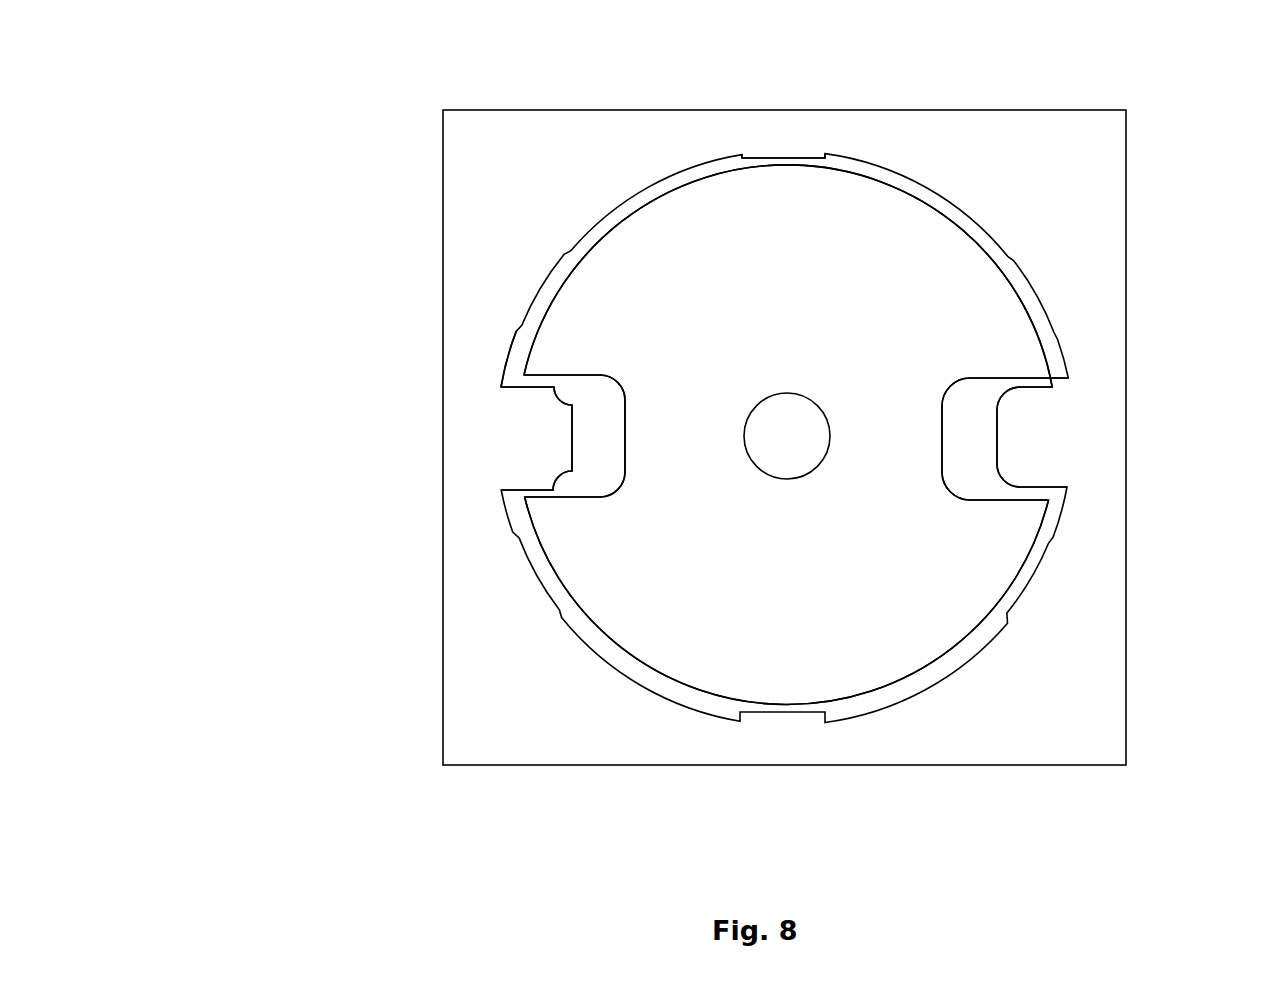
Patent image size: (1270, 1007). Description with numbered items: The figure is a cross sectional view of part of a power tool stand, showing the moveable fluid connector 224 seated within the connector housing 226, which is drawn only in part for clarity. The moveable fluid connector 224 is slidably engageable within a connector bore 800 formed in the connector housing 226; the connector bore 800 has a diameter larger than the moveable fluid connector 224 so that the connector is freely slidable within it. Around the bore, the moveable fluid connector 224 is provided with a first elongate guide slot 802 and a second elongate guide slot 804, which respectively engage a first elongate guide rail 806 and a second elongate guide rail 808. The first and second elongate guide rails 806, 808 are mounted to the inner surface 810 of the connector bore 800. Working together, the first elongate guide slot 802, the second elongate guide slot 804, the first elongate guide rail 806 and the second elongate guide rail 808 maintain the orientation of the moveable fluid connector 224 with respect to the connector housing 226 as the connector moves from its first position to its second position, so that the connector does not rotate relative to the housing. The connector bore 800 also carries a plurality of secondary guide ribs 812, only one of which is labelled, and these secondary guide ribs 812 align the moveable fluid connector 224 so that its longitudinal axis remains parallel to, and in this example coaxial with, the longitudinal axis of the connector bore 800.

The connector bore 800 is at (616, 205).
The first elongate guide slot 802 is at (578, 499).
The second elongate guide slot 804 is at (1068, 385).
The first elongate guide rail 806 is at (518, 428).
The second elongate guide rail 808 is at (1035, 428).
The inner surface 810 is at (507, 366).
The secondary guide rib 812 is at (764, 158).
The moveable fluid connector 224 is at (845, 217).
The connector housing 226 is at (452, 200).